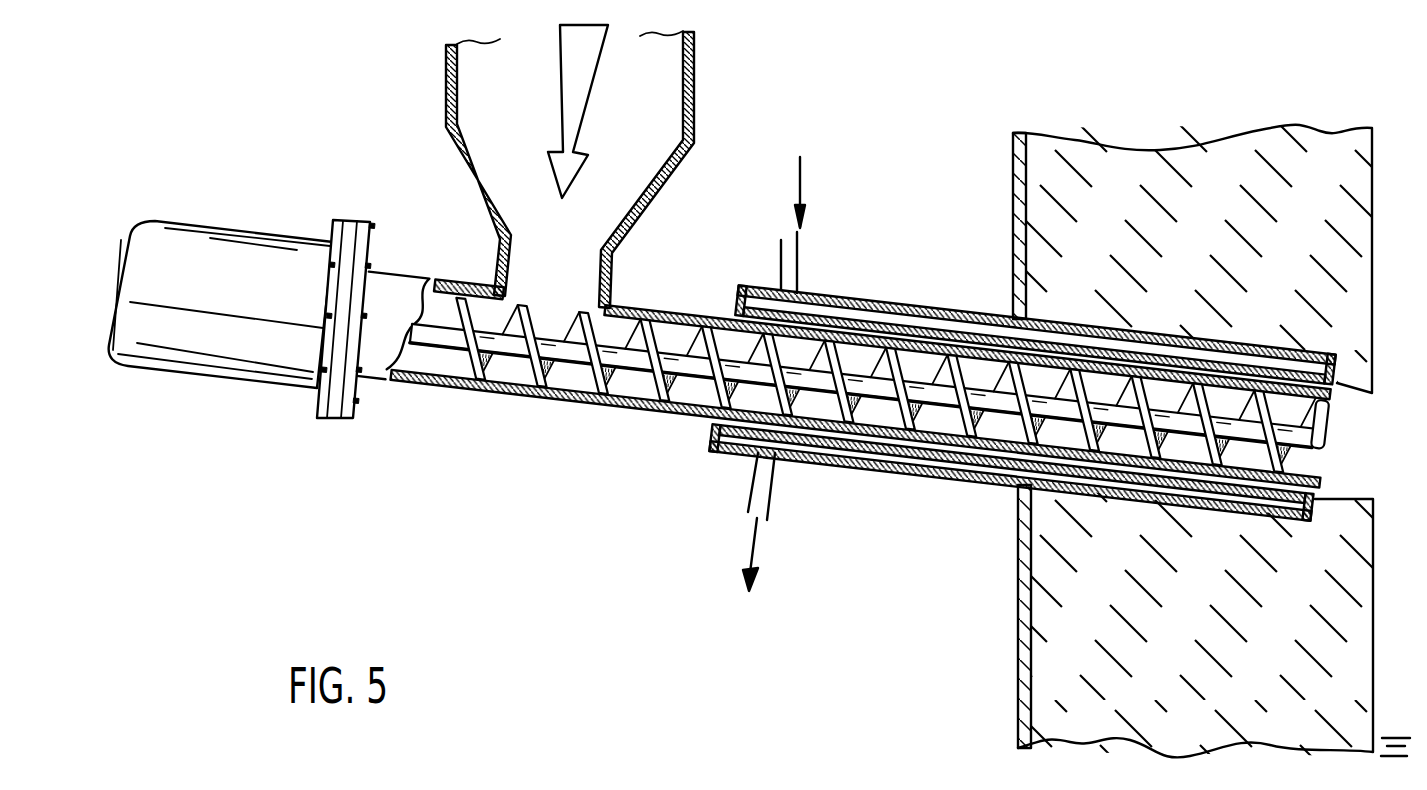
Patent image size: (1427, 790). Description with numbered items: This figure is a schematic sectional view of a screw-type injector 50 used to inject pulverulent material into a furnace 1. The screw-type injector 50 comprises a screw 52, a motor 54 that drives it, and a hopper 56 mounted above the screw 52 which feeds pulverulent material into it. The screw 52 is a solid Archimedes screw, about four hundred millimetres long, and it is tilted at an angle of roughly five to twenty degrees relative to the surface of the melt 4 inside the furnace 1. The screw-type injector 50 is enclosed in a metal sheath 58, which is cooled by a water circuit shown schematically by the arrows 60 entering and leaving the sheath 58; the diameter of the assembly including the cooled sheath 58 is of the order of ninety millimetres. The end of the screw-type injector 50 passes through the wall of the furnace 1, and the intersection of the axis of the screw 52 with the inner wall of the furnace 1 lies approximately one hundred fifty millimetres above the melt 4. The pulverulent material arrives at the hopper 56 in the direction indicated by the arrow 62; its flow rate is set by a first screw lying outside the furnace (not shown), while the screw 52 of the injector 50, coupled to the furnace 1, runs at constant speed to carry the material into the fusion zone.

The furnace 1 is at (1003, 693).
The melt 4 is at (1396, 736).
The screw-type injector 50 is at (275, 478).
The screw 52 is at (516, 366).
The motor 54 is at (190, 245).
The hopper 56 is at (447, 105).
The metal sheath 58 is at (900, 478).
The arrows showing water circuit 60 is at (800, 163).
The arrow showing flow of pulverulent material 62 is at (585, 53).